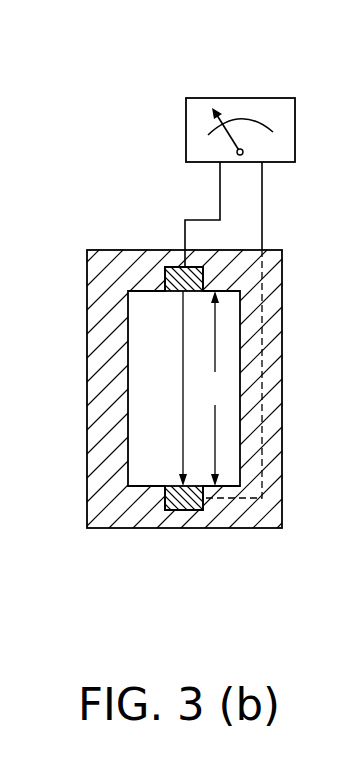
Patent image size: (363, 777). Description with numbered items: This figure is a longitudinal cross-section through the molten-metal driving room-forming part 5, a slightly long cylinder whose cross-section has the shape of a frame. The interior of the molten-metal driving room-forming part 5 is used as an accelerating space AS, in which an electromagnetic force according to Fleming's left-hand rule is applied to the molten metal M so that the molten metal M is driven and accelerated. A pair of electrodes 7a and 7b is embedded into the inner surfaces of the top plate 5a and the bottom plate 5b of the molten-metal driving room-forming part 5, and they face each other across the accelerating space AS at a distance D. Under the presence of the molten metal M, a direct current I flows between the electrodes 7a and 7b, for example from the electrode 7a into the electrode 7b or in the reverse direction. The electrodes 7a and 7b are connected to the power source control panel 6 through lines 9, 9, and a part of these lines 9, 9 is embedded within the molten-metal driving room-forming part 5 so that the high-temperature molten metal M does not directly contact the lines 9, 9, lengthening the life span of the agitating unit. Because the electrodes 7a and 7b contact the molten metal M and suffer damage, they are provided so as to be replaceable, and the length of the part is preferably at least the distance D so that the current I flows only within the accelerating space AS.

The power source control panel 6 is at (240, 98).
The lines 9 is at (220, 190).
The molten-metal driving room-forming part 5 is at (87, 272).
The top plate 5a is at (152, 265).
The bottom plate 5b is at (155, 512).
The electrode 7a is at (180, 267).
The electrode 7b is at (182, 510).
The direct current I is at (183, 362).
The distance between the electrodes D is at (215, 388).
The molten metal M is at (223, 355).
The accelerating space AS is at (128, 448).